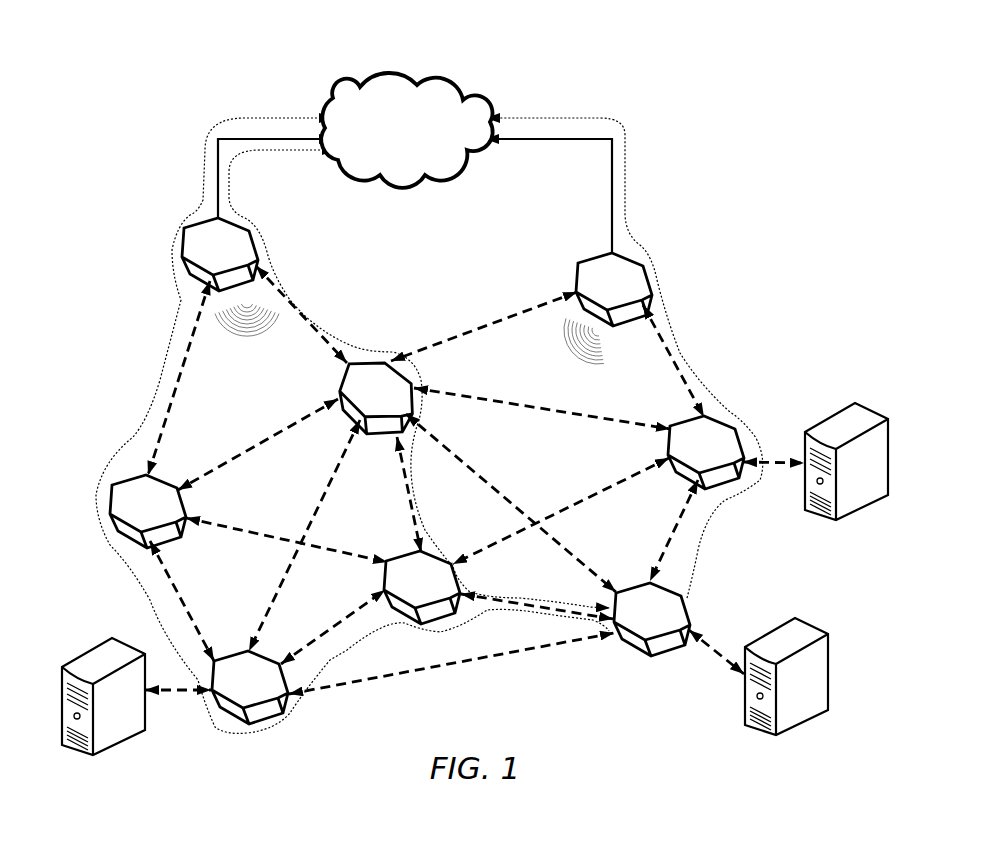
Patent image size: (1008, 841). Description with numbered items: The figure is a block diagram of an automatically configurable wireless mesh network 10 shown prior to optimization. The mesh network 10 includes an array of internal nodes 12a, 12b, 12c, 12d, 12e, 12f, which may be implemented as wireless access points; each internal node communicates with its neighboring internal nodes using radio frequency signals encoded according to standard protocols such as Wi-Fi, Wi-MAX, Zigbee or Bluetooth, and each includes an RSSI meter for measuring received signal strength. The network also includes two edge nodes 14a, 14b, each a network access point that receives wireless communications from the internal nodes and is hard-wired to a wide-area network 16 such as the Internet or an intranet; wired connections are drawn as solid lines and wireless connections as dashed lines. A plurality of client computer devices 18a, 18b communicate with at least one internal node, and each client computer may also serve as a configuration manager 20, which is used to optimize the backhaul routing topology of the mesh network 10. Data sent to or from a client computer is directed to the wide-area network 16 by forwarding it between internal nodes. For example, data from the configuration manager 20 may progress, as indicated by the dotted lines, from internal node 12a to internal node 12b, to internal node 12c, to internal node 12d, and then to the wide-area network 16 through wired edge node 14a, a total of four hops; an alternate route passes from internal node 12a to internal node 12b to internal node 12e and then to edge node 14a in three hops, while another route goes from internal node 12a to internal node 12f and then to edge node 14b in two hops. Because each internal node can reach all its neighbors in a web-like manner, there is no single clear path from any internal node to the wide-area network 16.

The wireless mesh network 10 is at (661, 36).
The wide-area network 16 is at (430, 78).
The edge node 14a is at (202, 256).
The edge node 14b is at (596, 291).
The internal node 12a is at (632, 620).
The internal node 12b is at (404, 589).
The internal node 12c is at (232, 690).
The internal node 12d is at (130, 513).
The internal node 12e is at (359, 400).
The internal node 12f is at (690, 454).
The client computer device 18a is at (102, 637).
The client computer device 18b is at (833, 410).
The configuration manager 20 is at (771, 633).